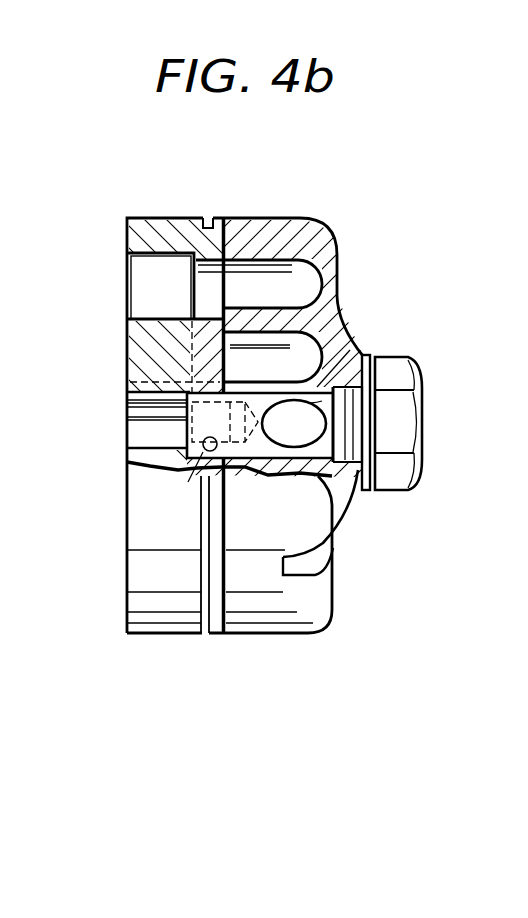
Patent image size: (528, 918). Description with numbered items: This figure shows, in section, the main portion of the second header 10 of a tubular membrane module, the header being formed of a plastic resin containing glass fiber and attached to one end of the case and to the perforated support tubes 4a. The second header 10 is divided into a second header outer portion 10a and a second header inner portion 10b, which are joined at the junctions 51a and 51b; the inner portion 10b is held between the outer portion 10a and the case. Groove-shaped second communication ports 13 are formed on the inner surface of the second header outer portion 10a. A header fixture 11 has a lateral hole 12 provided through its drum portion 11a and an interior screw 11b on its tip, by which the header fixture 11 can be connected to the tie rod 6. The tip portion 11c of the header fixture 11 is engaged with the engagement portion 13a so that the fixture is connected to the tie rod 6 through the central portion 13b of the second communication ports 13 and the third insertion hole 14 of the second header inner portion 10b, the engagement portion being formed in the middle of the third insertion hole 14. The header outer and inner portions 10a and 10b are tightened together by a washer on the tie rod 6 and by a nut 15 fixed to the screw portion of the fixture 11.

The perforated support tube 4a is at (150, 275).
The tie rod 6 is at (135, 428).
The second header 10 is at (222, 657).
The second header outer portion 10a is at (297, 624).
The second header inner portion 10b is at (166, 623).
The header fixture 11 is at (250, 456).
The drum portion 11a is at (342, 503).
The interior screw 11b is at (207, 450).
The tip portion 11c is at (190, 465).
The lateral hole 12 is at (350, 353).
The second communication port 13 is at (304, 217).
The engagement portion 13a is at (327, 337).
The central portion 13b is at (152, 355).
The third insertion hole 14 is at (143, 404).
The nut 15 is at (410, 368).
The junction 51a is at (207, 216).
The junction 51b is at (251, 238).